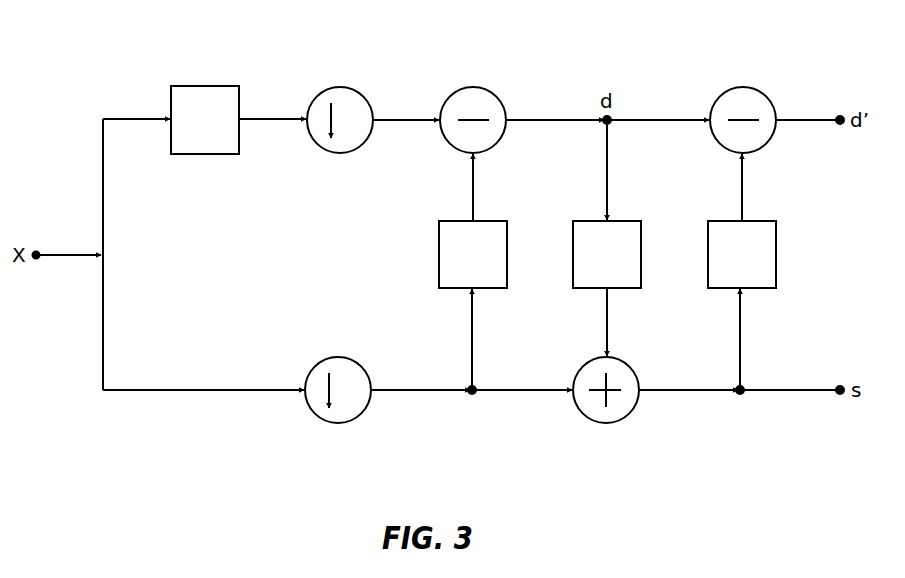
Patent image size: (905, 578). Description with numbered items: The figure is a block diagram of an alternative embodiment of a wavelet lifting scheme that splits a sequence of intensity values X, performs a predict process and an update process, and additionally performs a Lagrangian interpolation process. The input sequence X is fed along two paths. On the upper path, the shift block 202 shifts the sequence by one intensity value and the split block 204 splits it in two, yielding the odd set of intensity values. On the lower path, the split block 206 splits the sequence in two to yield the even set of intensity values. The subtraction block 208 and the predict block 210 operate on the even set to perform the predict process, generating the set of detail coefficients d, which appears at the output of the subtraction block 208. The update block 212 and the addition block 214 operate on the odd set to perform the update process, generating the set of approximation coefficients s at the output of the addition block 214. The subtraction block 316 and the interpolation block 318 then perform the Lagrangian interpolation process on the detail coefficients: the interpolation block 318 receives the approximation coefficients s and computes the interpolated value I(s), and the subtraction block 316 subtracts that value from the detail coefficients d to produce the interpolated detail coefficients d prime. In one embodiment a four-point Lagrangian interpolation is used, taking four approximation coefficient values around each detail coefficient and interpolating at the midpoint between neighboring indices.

The shift block (½S) 202 is at (205, 86).
The split block (↓2) 204 is at (340, 87).
The split block (↓2) 206 is at (338, 357).
The subtraction block (−) 208 is at (473, 87).
The predict block (P) 210 is at (439, 256).
The update block (U) 212 is at (573, 256).
The addition block (+) 214 is at (603, 423).
The subtraction block (−) 316 is at (743, 87).
The interpolation block (I) 318 is at (708, 255).